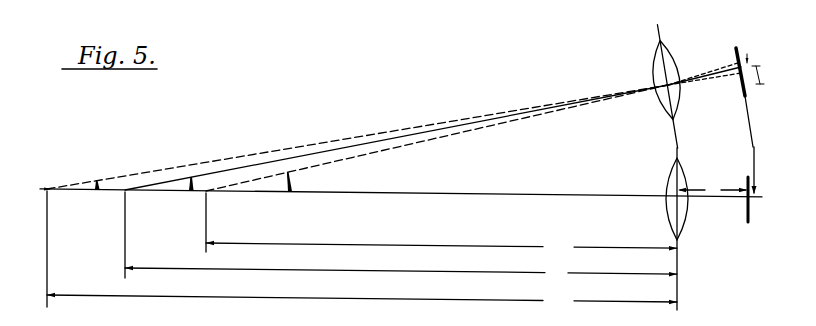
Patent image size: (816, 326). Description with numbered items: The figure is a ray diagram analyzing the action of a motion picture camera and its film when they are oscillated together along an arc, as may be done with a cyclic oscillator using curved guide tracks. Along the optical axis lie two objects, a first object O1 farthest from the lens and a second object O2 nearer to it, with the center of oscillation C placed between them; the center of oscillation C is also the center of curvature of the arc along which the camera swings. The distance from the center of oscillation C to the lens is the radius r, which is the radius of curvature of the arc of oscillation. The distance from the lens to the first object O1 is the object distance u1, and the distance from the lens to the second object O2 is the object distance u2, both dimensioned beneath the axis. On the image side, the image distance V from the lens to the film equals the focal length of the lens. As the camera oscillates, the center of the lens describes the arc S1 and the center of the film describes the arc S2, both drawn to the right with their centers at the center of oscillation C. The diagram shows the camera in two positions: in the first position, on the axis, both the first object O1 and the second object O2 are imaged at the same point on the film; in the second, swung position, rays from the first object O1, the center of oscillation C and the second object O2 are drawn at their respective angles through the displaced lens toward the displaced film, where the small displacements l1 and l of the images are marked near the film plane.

The first object O1 is at (45, 249).
The center of oscillation C is at (123, 234).
The second object O2 is at (214, 222).
The arc described by the lens center S1 is at (677, 146).
The arc described by the film center S2 is at (753, 146).
The image distance V is at (712, 191).
The second object distance u2 is at (441, 248).
The radius of curvature of arc of oscillation r is at (401, 273).
The first object distance u1 is at (362, 301).
The image displacement of O1 l1 is at (745, 52).
The image displacement l is at (757, 69).